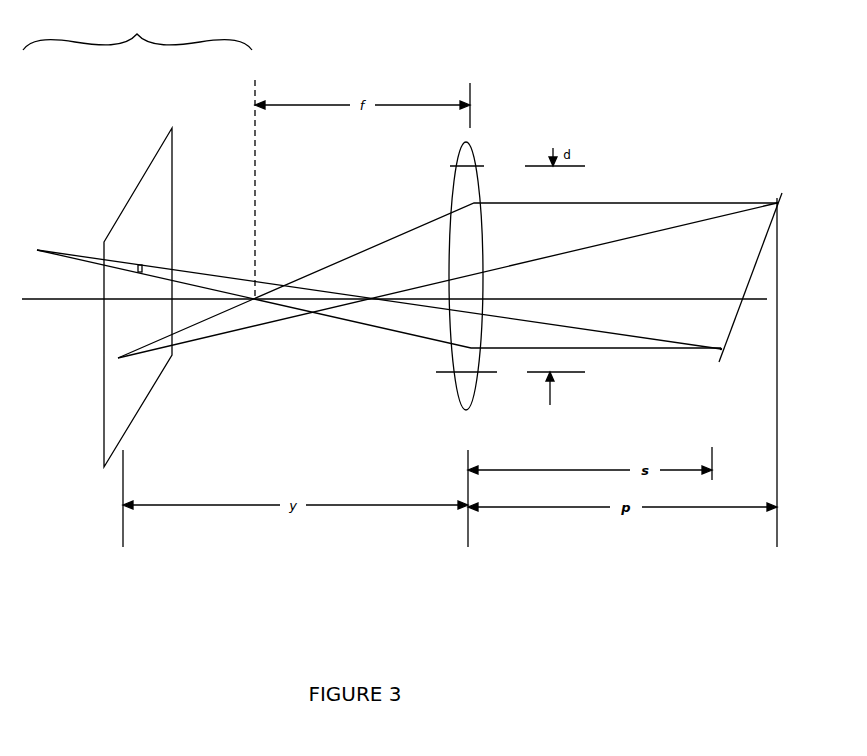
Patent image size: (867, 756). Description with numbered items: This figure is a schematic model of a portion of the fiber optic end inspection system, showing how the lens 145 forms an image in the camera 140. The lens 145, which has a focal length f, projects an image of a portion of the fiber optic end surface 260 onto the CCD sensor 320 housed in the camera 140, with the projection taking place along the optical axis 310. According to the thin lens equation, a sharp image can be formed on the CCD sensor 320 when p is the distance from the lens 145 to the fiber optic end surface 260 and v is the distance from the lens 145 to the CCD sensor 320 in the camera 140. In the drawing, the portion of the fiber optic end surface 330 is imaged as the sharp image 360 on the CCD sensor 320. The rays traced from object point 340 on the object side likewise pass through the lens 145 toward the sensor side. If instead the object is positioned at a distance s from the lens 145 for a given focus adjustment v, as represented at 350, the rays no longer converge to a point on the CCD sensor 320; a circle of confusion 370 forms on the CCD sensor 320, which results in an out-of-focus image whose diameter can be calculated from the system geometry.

The camera 140 is at (137, 32).
The lens 145 is at (478, 152).
The fiber optic end surface 260 is at (738, 313).
The optical axis 310 is at (748, 302).
The CCD sensor 320 is at (104, 415).
The portion of the fiber optic end surface 330 is at (777, 198).
The object point 340 is at (37, 248).
The object positioned at distance s 350 is at (727, 360).
The sharp image on the CCD sensor 360 is at (118, 362).
The circle of confusion 370 is at (140, 265).